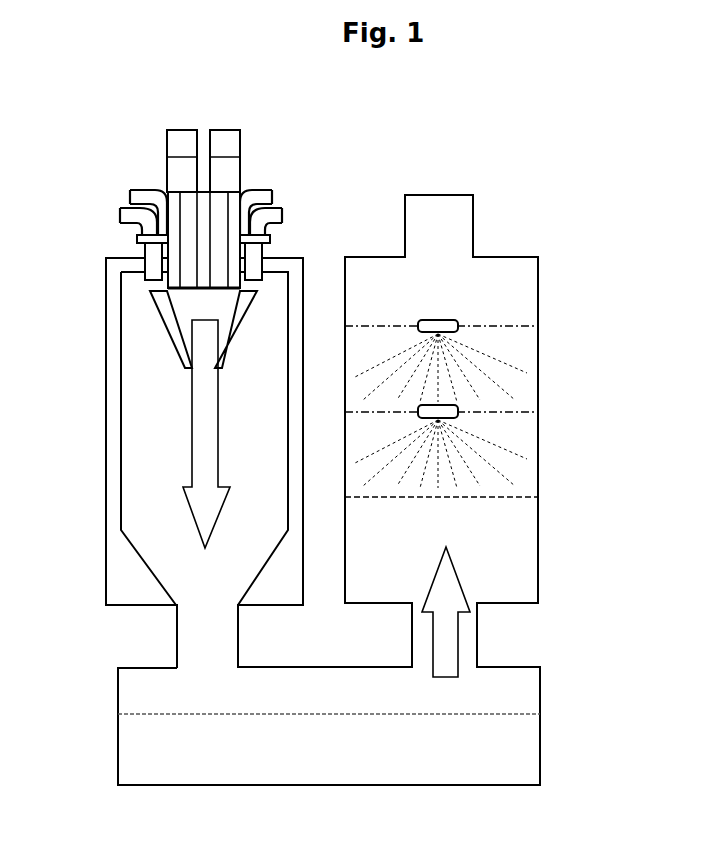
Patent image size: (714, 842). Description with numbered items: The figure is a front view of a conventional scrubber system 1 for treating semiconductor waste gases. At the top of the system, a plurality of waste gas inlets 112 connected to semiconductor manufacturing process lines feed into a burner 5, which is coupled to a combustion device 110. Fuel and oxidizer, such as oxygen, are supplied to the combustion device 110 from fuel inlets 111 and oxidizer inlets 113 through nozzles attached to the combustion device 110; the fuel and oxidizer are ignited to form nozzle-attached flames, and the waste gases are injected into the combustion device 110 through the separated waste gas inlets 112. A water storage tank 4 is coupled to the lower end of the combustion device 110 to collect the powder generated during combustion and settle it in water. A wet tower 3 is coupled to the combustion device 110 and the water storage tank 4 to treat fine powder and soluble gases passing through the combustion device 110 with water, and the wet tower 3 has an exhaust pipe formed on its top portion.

The scrubber system 1 is at (428, 89).
The wet tower 3 is at (538, 428).
The water storage tank 4 is at (118, 700).
The burner 5 is at (140, 263).
The combustion device 110 is at (110, 435).
The fuel inlets 111 is at (142, 188).
The waste gas inlets 112 is at (218, 130).
The oxidizer inlets 113 is at (120, 208).